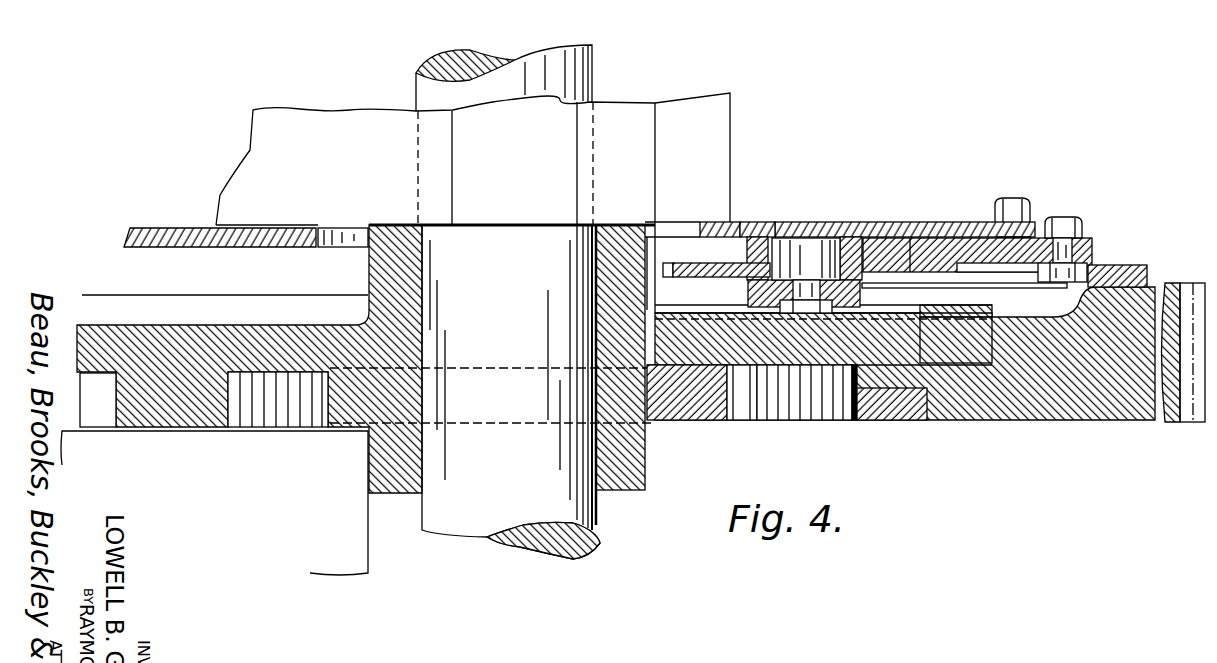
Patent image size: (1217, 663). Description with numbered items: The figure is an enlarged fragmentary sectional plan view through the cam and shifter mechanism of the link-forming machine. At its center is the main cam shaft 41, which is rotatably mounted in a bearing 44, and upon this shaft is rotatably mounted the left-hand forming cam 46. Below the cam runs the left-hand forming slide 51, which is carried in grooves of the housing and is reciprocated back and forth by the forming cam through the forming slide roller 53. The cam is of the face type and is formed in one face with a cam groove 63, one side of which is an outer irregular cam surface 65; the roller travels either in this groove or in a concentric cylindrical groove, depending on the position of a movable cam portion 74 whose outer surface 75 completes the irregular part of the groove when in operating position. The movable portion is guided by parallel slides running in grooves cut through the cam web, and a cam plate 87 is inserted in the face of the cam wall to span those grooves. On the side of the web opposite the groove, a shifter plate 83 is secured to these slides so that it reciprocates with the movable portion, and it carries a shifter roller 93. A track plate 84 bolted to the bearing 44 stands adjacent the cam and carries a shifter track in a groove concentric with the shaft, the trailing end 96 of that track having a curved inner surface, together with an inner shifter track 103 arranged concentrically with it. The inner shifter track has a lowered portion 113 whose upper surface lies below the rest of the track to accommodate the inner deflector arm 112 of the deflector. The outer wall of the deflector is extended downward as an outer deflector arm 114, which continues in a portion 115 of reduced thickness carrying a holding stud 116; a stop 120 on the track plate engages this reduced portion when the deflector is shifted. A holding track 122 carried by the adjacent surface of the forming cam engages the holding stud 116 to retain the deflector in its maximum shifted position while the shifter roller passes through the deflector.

The main cam shaft 41 is at (593, 74).
The bearing 44 is at (720, 150).
The left-hand forming cam 46 is at (1038, 405).
The left-hand forming slide 51 is at (348, 531).
The forming slide roller 53 is at (287, 410).
The cam groove 63 is at (796, 406).
The outer irregular cam surface 65 is at (851, 416).
The movable cam portion 74 is at (705, 410).
The outer surface of movable cam portion 75 is at (742, 410).
The shifter plate 83 is at (753, 293).
The track plate 84 is at (180, 229).
The cam plate 87 is at (901, 413).
The shifter roller 93 is at (800, 255).
The trailing end of shifter track 96 is at (851, 238).
The inner shifter track 103 is at (747, 253).
The inner deflector arm 112 is at (665, 278).
The lowered portion of inner shifter track 113 is at (755, 237).
The outer deflector arm 114 is at (908, 255).
The reduced-thickness portion 115 is at (1088, 256).
The holding stud 116 is at (1088, 273).
The stop 120 is at (1008, 268).
The holding track 122 is at (1130, 268).